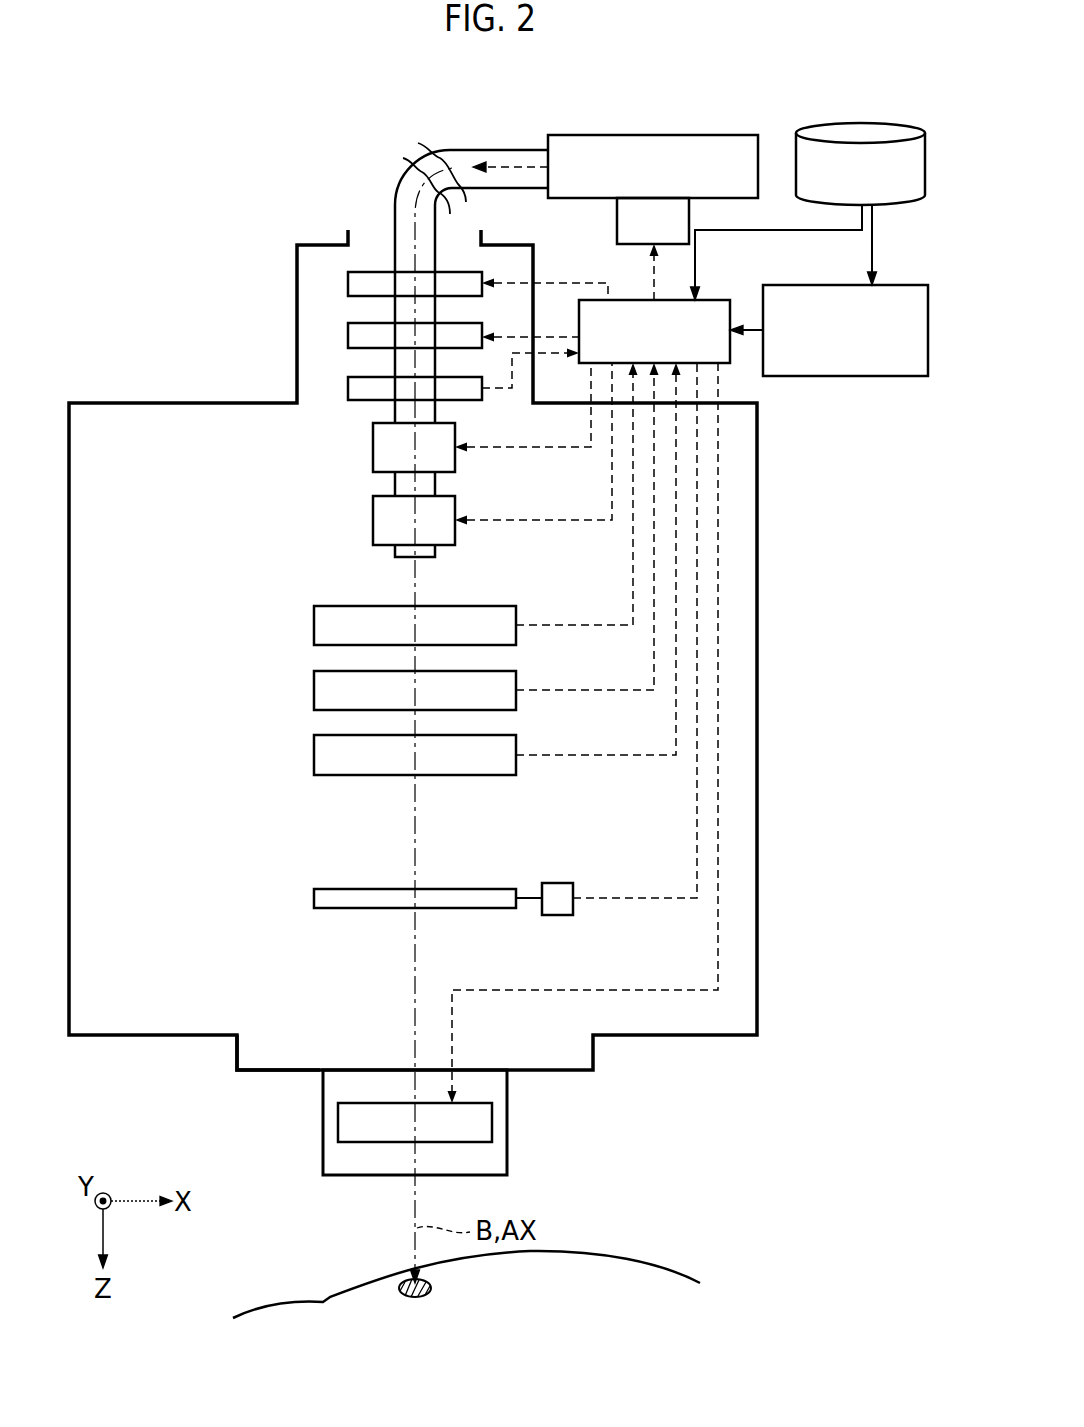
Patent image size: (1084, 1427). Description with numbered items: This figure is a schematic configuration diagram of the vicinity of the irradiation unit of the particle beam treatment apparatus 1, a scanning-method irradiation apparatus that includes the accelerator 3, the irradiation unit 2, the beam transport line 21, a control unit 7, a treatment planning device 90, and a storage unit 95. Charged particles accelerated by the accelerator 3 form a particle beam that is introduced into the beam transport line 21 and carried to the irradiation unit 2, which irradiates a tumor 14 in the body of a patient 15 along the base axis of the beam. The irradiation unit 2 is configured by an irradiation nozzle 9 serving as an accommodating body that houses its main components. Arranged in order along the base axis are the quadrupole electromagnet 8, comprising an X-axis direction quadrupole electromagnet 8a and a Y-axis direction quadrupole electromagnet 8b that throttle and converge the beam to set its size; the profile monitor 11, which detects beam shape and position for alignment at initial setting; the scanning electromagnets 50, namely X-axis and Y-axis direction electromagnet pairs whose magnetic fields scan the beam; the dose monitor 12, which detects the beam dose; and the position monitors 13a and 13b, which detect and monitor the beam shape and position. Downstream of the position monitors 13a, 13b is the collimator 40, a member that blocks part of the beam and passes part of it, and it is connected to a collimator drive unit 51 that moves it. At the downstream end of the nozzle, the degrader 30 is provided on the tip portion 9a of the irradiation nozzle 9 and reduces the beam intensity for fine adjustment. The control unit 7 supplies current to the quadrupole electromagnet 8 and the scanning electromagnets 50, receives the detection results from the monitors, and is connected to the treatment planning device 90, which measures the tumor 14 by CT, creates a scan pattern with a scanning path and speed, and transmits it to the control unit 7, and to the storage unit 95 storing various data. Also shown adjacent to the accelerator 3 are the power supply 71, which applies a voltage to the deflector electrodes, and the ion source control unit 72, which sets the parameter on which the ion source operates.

The particle beam treatment apparatus 1 is at (264, 120).
The irradiation unit 2 is at (186, 249).
The accelerator 3 is at (706, 134).
The control unit 7 is at (720, 300).
The quadrupole electromagnet 8 is at (253, 270).
The X-axis direction quadrupole electromagnet 8a is at (348, 279).
The Y-axis direction quadrupole electromagnet 8b is at (348, 331).
The irradiation nozzle 9 is at (759, 648).
The tip portion of the irradiation nozzle 9a is at (247, 1052).
The profile monitor 11 is at (348, 384).
The dose monitor 12 is at (314, 624).
The position monitor 13a is at (314, 687).
The position monitor 13b is at (314, 751).
The tumor 14 is at (431, 1288).
The patient 15 is at (270, 1305).
The beam transport line 21 is at (396, 192).
The degrader 30 is at (492, 1120).
The collimator 40 is at (330, 884).
The scanning electromagnets 50 is at (373, 452).
The collimator drive unit 51 is at (567, 878).
The power supply 71 is at (601, 221).
The ion source control unit 72 is at (617, 215).
The treatment planning device 90 is at (891, 285).
The storage unit 95 is at (891, 120).